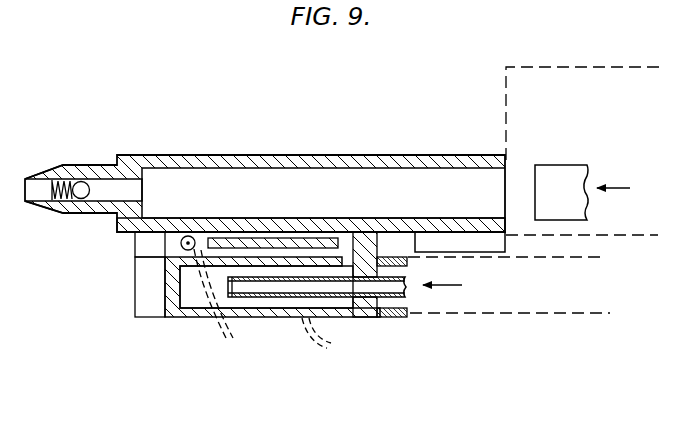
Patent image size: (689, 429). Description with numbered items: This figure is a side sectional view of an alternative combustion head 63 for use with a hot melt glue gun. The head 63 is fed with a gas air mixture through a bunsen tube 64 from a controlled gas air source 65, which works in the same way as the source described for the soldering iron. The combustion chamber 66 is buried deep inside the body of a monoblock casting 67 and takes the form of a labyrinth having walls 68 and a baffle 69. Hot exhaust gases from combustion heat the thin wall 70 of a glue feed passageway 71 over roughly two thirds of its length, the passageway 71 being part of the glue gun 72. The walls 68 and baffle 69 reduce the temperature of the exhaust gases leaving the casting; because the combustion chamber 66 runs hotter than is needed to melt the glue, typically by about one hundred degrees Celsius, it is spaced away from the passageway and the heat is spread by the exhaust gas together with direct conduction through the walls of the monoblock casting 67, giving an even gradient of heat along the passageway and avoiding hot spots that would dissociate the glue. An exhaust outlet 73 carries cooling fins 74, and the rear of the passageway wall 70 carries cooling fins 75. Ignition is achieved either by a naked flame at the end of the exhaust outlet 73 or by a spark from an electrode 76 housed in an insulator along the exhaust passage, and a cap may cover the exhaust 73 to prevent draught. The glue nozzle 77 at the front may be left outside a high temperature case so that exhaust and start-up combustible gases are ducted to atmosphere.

The head 63 is at (283, 142).
The bunsen tube 64 is at (310, 288).
The controlled gas air source 65 is at (477, 298).
The combustion chamber 66 is at (202, 293).
The monoblock casting 67 is at (168, 296).
The walls 68 is at (368, 238).
The baffle 69 is at (323, 238).
The thin wall 70 is at (230, 225).
The glue feed passageway 71 is at (335, 175).
The glue gun 72 is at (562, 160).
The exhaust outlet 73 is at (170, 243).
The cooling fins 74 is at (138, 273).
The cooling fins 75 is at (447, 237).
The electrode 76 is at (199, 232).
The glue nozzle 77 is at (36, 178).